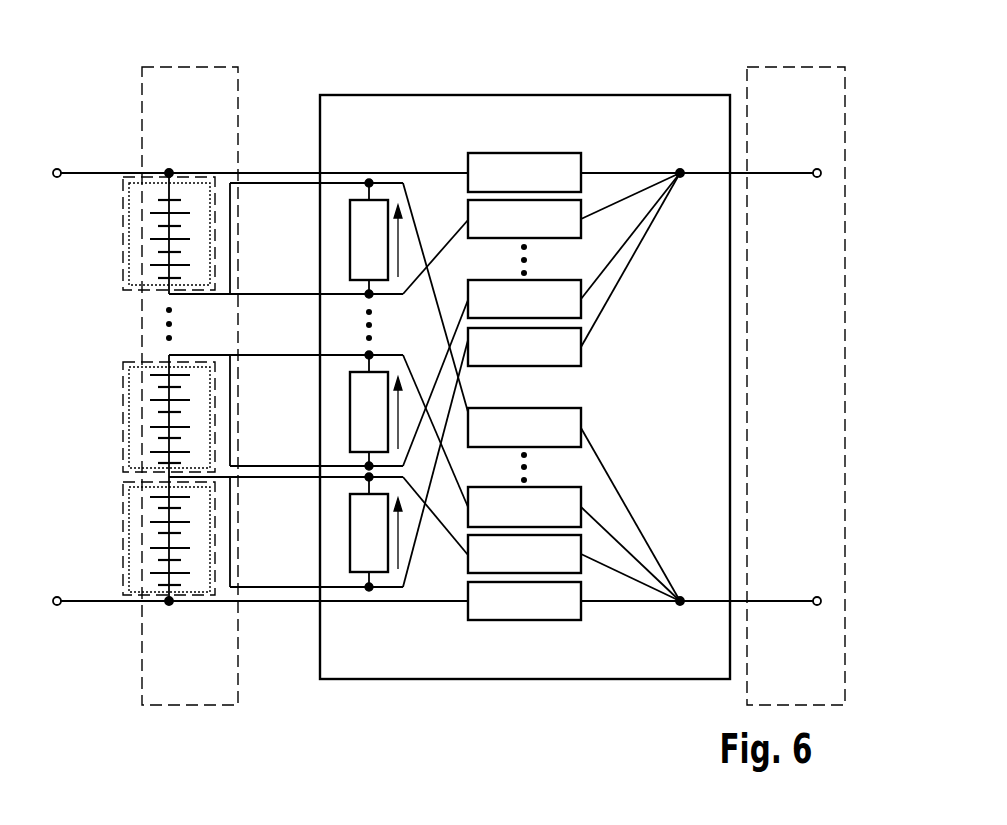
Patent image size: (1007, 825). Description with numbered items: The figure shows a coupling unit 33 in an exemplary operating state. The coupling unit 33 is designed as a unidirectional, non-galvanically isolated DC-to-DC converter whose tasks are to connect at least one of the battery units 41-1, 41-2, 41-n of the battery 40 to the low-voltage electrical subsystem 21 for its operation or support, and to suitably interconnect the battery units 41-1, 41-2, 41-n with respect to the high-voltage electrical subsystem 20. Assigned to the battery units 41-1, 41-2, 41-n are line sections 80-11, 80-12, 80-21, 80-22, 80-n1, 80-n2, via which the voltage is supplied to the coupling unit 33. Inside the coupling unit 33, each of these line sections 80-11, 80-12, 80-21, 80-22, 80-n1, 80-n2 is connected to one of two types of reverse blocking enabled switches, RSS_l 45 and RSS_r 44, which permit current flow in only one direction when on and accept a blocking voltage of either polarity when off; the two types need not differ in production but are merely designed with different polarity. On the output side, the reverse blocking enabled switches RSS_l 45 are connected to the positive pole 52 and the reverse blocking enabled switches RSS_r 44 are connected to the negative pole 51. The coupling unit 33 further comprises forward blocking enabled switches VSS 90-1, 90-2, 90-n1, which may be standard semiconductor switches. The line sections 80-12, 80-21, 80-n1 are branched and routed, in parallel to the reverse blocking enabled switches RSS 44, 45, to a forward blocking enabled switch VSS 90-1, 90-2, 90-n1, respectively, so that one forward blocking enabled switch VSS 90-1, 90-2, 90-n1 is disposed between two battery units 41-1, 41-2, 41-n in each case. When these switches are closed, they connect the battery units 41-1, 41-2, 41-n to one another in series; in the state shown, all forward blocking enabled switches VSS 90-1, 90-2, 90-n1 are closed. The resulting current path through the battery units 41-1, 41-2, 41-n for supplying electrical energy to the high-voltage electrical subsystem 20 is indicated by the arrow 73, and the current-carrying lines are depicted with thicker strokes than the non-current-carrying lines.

The high-voltage electrical subsystem 20 is at (160, 67).
The low-voltage electrical subsystem 21 is at (749, 380).
The coupling unit 33 is at (605, 95).
The battery 40 is at (210, 178).
The battery unit 41-n is at (123, 236).
The battery unit 41-2 is at (123, 422).
The battery unit 41-1 is at (123, 543).
The reverse blocking enabled switch RSS_r 44 is at (527, 153).
The reverse blocking enabled switch RSS_l 45 is at (525, 620).
The negative pole 51 is at (817, 168).
The positive pole 52 is at (817, 606).
The current path 73 is at (281, 146).
The line section 80-n2 is at (97, 170).
The line section 80-n1 is at (169, 294).
The line section 80-22 is at (169, 356).
The line section 80-21 is at (169, 477).
The line section 80-11 is at (169, 605).
The line section 80-12 is at (275, 590).
The forward blocking enabled switch VSS 90-n1 is at (350, 242).
The forward blocking enabled switch VSS 90-2 is at (350, 412).
The forward blocking enabled switch VSS 90-1 is at (350, 535).